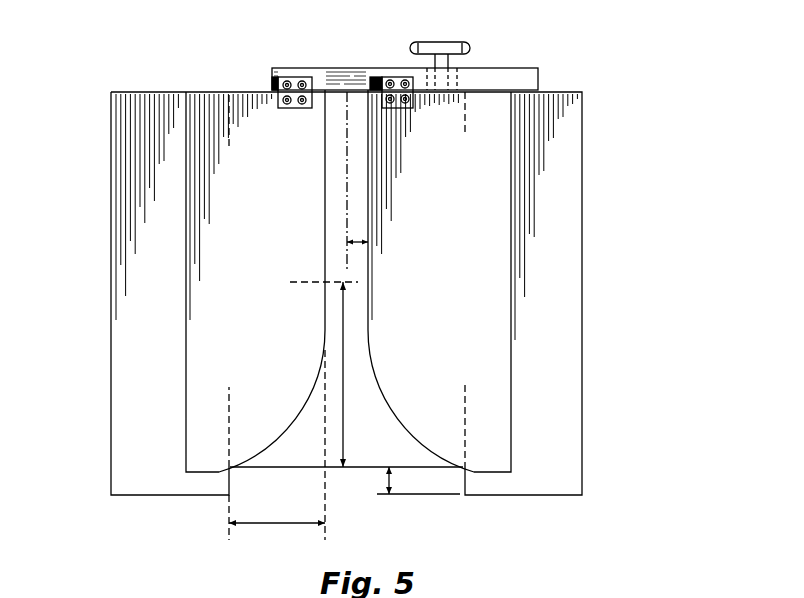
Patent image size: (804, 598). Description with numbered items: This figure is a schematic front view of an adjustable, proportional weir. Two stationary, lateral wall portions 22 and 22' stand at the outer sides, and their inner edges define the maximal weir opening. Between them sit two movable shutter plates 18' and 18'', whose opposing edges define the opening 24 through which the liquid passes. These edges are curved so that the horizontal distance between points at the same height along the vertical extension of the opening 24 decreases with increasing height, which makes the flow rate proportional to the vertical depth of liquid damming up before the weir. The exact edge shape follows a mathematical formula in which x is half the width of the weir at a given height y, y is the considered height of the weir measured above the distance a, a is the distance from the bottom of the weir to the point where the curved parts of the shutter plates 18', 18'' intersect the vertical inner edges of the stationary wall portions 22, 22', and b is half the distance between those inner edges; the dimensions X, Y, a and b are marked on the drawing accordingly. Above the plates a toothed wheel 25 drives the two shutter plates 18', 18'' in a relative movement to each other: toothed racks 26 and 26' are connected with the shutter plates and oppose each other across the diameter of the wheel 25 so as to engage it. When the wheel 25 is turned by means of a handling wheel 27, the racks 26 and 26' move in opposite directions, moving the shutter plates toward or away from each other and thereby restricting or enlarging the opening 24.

The stationary lateral wall portion 22 is at (149, 293).
The stationary lateral wall portion 22' is at (563, 293).
The shutter plate 18' is at (173, 281).
The shutter plate 18'' is at (518, 281).
The opening 24 is at (350, 118).
The toothed wheel 25 is at (457, 77).
The toothed rack 26 is at (222, 73).
The toothed rack 26' is at (521, 72).
The handling wheel 27 is at (461, 43).
The half width of the weir X is at (358, 240).
The height of the weir above a Y is at (347, 362).
The distance from the bottom of the weir a is at (385, 482).
The half distance between inner edges b is at (258, 523).